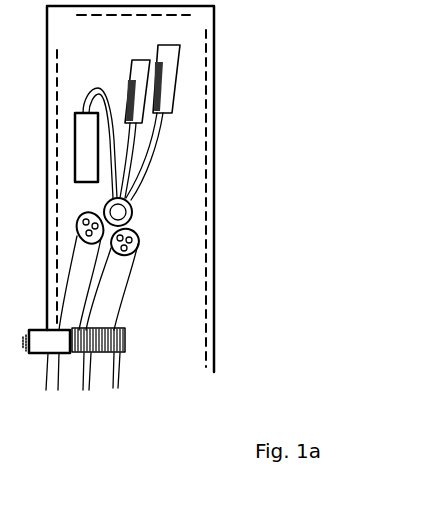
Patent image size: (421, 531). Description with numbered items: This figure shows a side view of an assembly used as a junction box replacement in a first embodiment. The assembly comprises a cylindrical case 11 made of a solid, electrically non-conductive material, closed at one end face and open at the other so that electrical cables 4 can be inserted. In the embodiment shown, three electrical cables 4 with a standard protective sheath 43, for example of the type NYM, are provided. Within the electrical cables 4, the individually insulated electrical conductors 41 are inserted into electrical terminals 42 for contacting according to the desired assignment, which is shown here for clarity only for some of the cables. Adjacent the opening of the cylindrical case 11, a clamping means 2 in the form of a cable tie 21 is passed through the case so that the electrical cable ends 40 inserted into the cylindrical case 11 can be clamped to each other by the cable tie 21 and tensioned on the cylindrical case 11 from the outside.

The clamping means 2 is at (33, 397).
The electrical cable 4 is at (129, 306).
The cylindrical case 11 is at (214, 88).
The cable tie 21 is at (125, 345).
The electrical cable end 40 is at (158, 236).
The electrical conductor 41 is at (163, 116).
The electrical terminal 42 is at (172, 62).
The protective sheath 43 is at (147, 180).